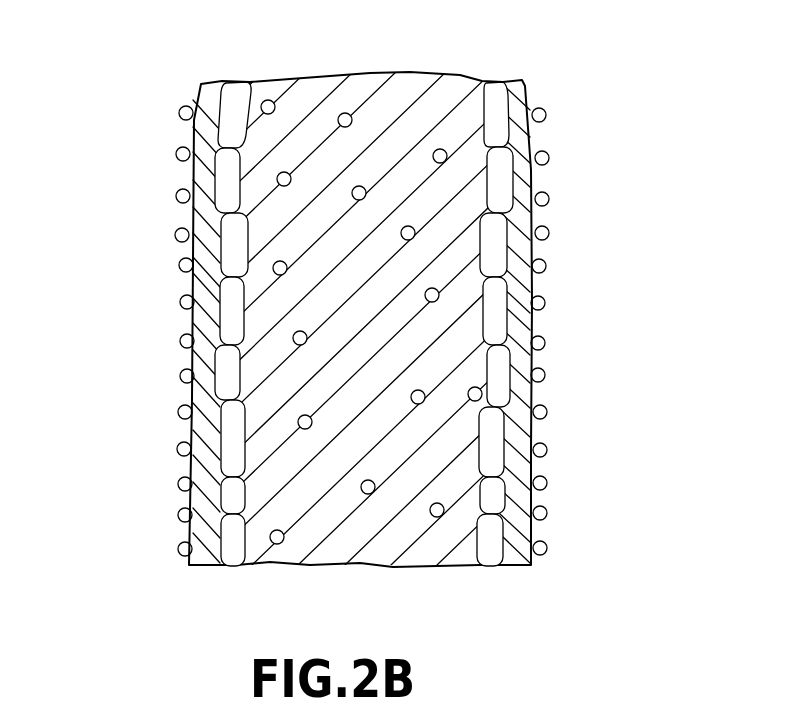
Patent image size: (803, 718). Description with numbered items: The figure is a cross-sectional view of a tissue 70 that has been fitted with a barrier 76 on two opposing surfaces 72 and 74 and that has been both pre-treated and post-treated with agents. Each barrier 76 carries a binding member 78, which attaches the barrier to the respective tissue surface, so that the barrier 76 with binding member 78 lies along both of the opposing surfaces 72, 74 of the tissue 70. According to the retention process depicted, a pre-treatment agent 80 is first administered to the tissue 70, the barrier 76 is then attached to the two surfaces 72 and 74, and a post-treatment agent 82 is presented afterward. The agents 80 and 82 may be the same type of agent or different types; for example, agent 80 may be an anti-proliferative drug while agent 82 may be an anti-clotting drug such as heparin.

The tissue 70 is at (586, 28).
The surface 72 is at (252, 395).
The surface 74 is at (476, 394).
The barrier 76 is at (190, 128).
The binding member 78 is at (218, 363).
The agent 80 is at (302, 420).
The agent 82 is at (183, 266).